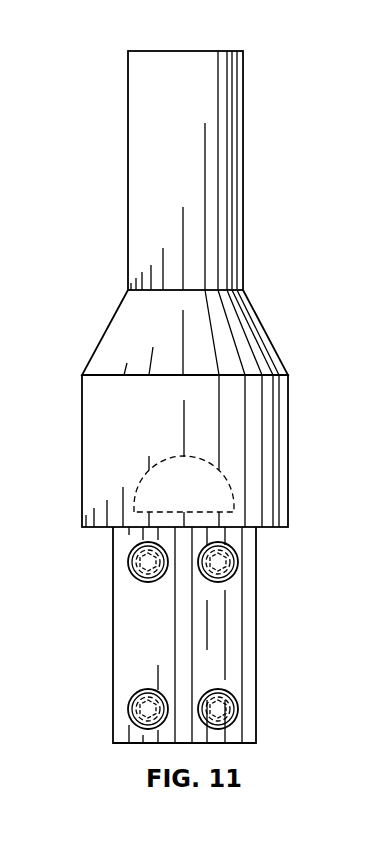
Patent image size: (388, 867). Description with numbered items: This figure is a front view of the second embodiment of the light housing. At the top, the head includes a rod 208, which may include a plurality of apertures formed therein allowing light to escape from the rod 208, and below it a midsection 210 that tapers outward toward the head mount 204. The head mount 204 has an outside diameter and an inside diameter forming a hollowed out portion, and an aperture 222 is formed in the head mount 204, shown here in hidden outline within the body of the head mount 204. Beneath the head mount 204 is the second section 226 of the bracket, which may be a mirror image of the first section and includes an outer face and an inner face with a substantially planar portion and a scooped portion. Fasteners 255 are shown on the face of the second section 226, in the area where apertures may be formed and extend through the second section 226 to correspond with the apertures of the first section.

The rod 208 is at (222, 172).
The midsection 210 is at (230, 328).
The head mount 204 is at (273, 427).
The aperture 222 is at (217, 492).
The second section 226 is at (240, 637).
The fasteners 255 is at (237, 562).